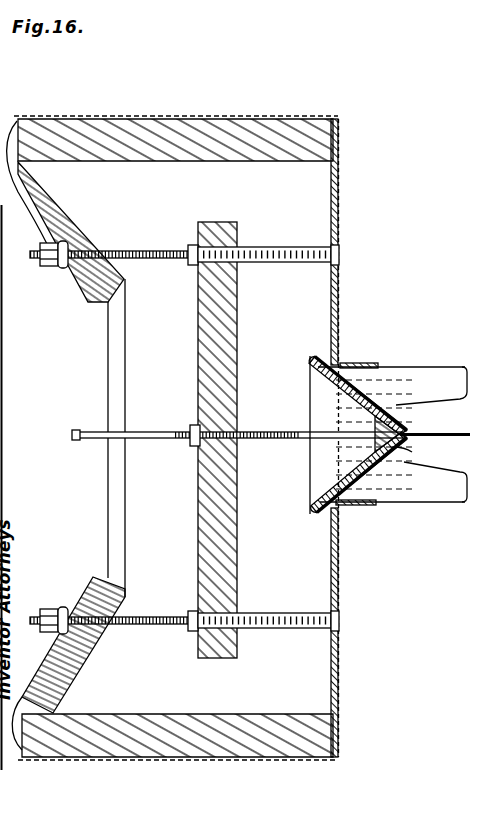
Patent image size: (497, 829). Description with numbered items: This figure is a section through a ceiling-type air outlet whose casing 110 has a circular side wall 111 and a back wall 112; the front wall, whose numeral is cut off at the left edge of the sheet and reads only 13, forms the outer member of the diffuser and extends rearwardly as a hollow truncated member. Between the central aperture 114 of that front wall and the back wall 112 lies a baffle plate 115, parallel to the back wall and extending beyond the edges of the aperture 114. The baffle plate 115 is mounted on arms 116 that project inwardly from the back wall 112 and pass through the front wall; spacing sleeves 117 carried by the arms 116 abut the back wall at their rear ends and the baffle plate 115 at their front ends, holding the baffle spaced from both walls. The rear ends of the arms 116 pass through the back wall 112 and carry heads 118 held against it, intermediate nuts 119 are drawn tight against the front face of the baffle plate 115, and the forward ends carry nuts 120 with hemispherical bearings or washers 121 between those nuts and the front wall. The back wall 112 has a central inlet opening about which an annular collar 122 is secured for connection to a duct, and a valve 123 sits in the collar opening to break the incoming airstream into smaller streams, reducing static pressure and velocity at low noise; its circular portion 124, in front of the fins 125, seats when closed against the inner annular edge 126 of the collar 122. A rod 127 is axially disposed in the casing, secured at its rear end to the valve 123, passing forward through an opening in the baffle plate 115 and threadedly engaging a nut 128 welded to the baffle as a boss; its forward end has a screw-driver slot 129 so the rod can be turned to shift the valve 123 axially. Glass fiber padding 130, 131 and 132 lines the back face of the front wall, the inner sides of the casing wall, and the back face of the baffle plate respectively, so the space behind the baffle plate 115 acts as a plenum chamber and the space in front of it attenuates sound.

The covering sheet 13 is at (29, 202).
The casing 110 is at (336, 116).
The circular side wall 111 is at (198, 119).
The back wall 112 is at (337, 198).
The central aperture 114 is at (124, 356).
The baffle plate 115 is at (199, 352).
The arms 116 is at (147, 251).
The spacing sleeves 117 is at (274, 247).
The heads 118 is at (340, 254).
The intermediate nuts 119 is at (193, 245).
The nuts 120 is at (48, 267).
The hemispherical bearings or washers 121 is at (63, 269).
The annular collar 122 is at (360, 365).
The valve 123 is at (393, 447).
The circular portion 124 is at (318, 510).
The fins 125 is at (456, 376).
The inner annular edge 126 is at (338, 509).
The rod 127 is at (152, 440).
The nut 128 is at (192, 428).
The screw-driver slot 129 is at (72, 437).
The glass fiber padding 130 is at (76, 226).
The glass fiber padding 131 is at (236, 724).
The glass fiber padding 132 is at (236, 568).